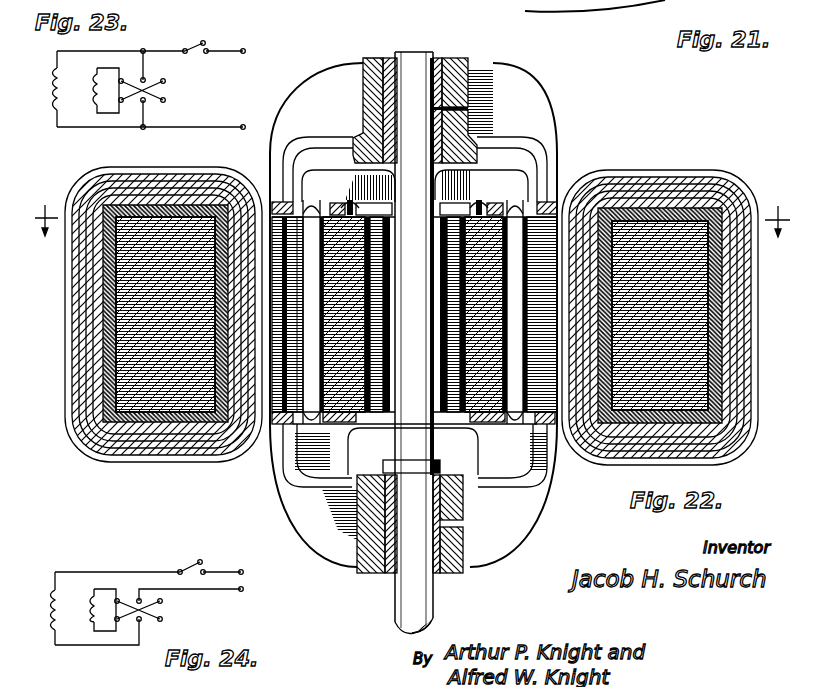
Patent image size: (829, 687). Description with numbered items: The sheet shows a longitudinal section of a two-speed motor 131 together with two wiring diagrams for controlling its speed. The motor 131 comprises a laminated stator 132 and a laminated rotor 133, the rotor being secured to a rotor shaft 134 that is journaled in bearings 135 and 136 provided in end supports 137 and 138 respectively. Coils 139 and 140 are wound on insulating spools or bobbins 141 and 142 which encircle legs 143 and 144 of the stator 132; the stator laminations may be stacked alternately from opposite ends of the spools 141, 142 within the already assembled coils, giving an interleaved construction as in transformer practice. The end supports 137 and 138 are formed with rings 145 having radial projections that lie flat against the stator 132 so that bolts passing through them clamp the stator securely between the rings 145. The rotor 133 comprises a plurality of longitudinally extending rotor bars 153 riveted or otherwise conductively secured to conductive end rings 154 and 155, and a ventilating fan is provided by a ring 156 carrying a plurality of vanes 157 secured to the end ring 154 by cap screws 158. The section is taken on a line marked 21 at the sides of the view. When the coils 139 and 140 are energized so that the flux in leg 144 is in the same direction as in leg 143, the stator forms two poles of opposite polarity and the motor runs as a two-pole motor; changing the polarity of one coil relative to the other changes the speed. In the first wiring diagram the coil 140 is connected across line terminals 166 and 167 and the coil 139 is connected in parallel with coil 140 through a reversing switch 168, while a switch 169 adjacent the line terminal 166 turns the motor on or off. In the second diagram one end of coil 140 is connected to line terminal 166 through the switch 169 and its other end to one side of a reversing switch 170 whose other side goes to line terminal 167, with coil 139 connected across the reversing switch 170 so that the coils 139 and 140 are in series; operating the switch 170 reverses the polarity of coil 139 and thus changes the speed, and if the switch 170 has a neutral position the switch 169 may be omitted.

In FIG. 22, the section line 21- 21 is at (414, 227).
In FIG. 22, the two-speed motor 131 is at (560, 157).
In FIG. 22, the laminated stator 132 is at (690, 231).
In FIG. 22, the laminated rotor 133 is at (483, 233).
In FIG. 22, the rotor shaft 134 is at (419, 55).
In FIG. 22, the bearing 135 is at (377, 100).
In FIG. 22, the bearing 136 is at (385, 555).
In FIG. 22, the end support 137 is at (485, 92).
In FIG. 22, the end support 138 is at (355, 531).
In FIG. 23, the coil 139 is at (95, 95).
In FIG. 24, the coil 139 is at (88, 610).
In FIG. 22, the coil 139 is at (663, 188).
In FIG. 23, the coil 140 is at (55, 94).
In FIG. 24, the coil 140 is at (50, 604).
In FIG. 22, the coil 140 is at (96, 300).
In FIG. 22, the insulating spool 141 is at (718, 301).
In FIG. 22, the insulating spool 142 is at (103, 349).
In FIG. 22, the stator leg 143 is at (692, 368).
In FIG. 22, the stator leg 144 is at (152, 390).
In FIG. 22, the ring 145 is at (276, 202).
In FIG. 22, the rotor bar 153 is at (283, 425).
In FIG. 22, the end ring 154 is at (324, 204).
In FIG. 22, the end ring 155 is at (336, 430).
In FIG. 22, the ring 156 is at (345, 206).
In FIG. 22, the vane 157 is at (481, 192).
In FIG. 22, the cap screw 158 is at (349, 205).
In FIG. 23, the line terminal 166 is at (245, 50).
In FIG. 24, the line terminal 166 is at (250, 559).
In FIG. 23, the line terminal 167 is at (244, 126).
In FIG. 24, the line terminal 167 is at (243, 590).
In FIG. 23, the reversing switch 168 is at (164, 92).
In FIG. 23, the switch 169 is at (204, 41).
In FIG. 24, the switch 169 is at (198, 563).
In FIG. 24, the reversing switch 170 is at (161, 610).